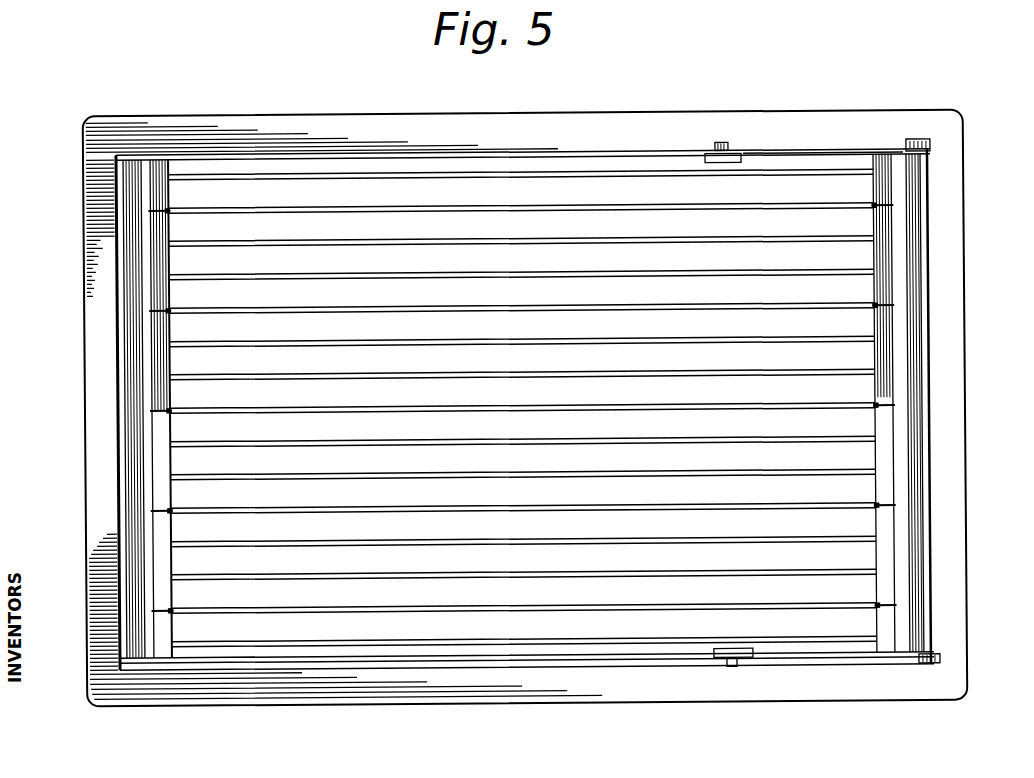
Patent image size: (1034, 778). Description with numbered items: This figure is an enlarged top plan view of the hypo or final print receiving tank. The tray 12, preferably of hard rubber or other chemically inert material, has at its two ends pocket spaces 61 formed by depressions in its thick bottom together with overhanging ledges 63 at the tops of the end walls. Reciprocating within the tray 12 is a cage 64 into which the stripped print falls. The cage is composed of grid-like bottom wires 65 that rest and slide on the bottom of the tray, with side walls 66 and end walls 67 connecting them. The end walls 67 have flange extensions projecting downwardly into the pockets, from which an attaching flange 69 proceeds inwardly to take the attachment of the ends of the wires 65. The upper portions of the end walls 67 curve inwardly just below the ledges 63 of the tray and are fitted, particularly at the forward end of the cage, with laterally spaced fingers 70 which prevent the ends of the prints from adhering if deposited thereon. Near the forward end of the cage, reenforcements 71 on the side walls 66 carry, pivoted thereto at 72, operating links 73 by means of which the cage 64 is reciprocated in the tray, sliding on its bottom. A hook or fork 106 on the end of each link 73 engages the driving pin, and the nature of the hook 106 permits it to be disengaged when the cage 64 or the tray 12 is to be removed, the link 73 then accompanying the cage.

The tray 12 is at (352, 116).
The pocket spaces 61 is at (932, 558).
The overhanging ledges 63 is at (942, 281).
The cage 64 is at (543, 151).
The bottom wires 65 is at (652, 183).
The side walls 66 is at (632, 152).
The end walls 67 is at (914, 236).
The attaching flange 69 is at (162, 229).
The fingers 70 is at (164, 302).
The reenforcements 71 is at (738, 165).
The pivot 72 is at (727, 143).
The operating links 73 is at (800, 151).
The hook or fork 106 is at (910, 142).